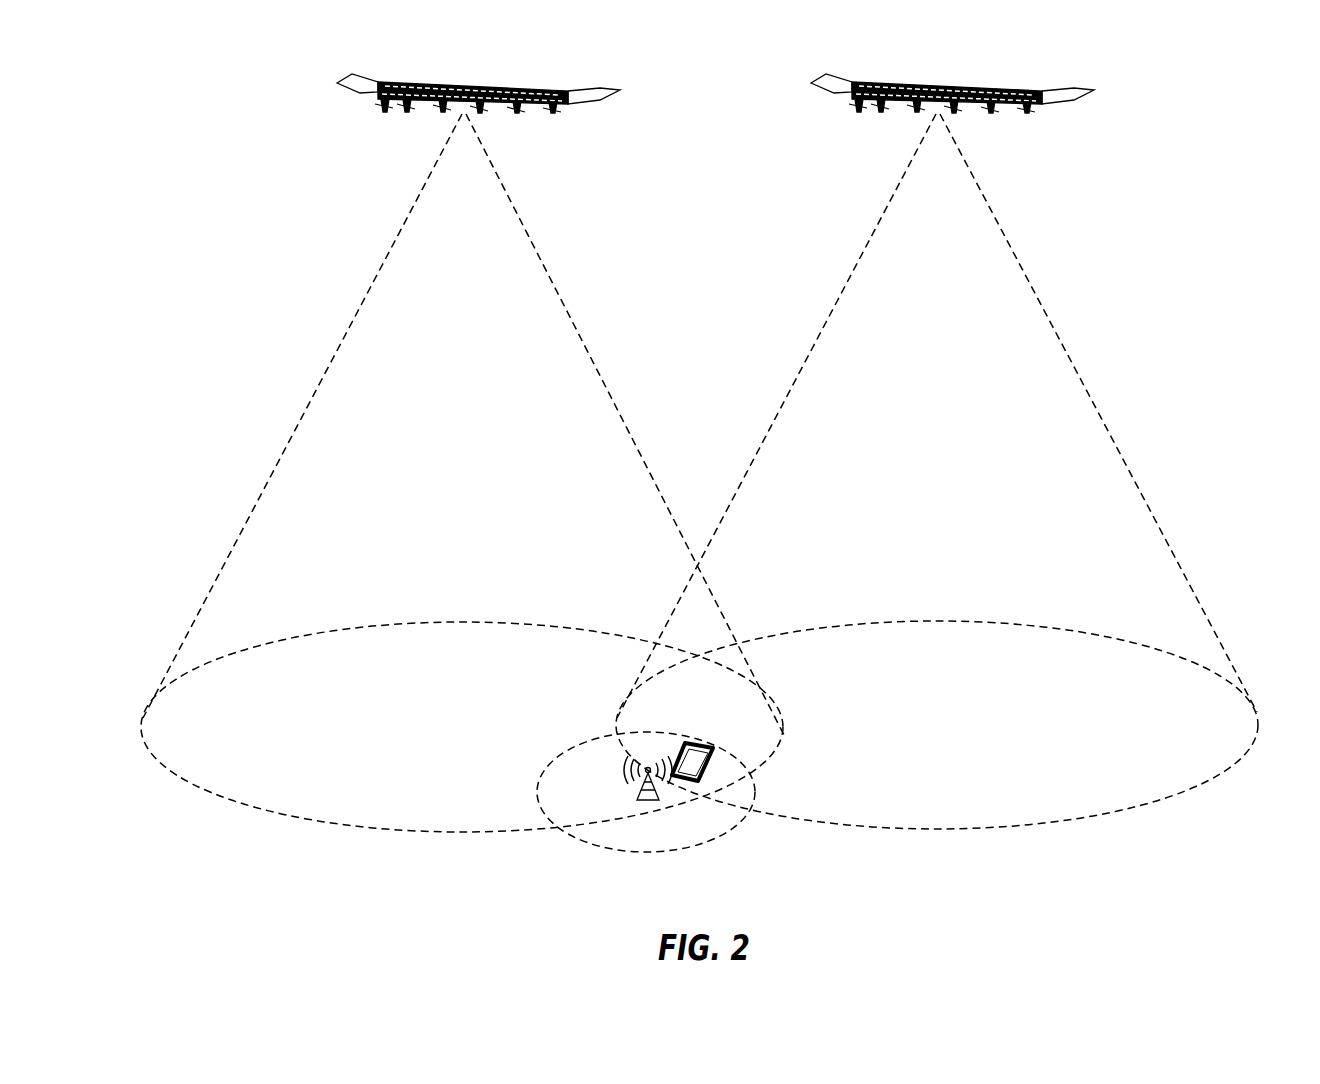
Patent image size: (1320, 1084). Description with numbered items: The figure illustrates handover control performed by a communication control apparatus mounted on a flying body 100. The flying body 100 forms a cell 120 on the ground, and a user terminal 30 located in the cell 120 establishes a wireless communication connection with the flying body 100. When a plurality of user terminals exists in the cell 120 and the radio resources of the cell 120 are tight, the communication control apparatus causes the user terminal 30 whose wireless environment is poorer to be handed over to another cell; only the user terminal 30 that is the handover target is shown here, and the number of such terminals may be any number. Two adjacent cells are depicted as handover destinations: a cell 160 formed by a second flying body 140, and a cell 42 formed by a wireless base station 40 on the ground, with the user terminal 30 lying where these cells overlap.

The flying body 100 is at (370, 62).
The flying body 140 is at (845, 62).
The cell 120 is at (490, 611).
The cell 160 is at (967, 611).
The user terminal 30 is at (700, 743).
The wireless base station 40 is at (642, 796).
The cell 42 is at (646, 853).